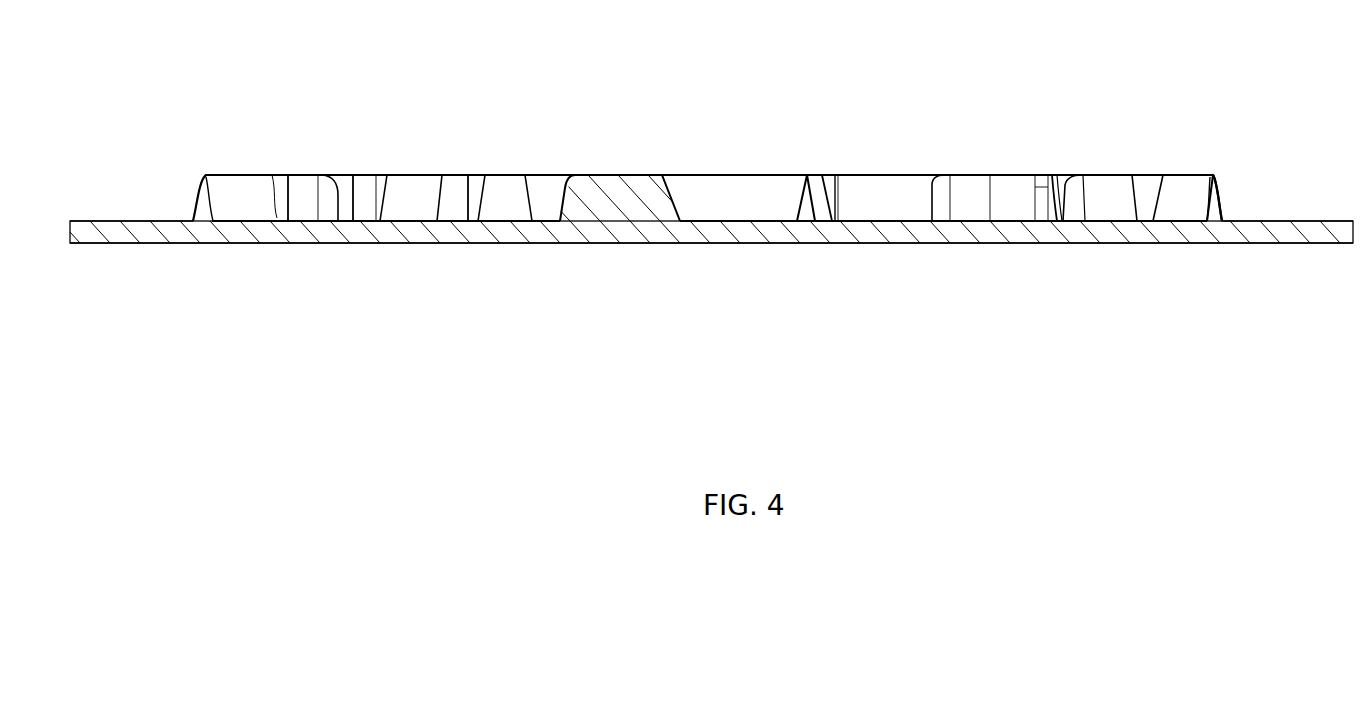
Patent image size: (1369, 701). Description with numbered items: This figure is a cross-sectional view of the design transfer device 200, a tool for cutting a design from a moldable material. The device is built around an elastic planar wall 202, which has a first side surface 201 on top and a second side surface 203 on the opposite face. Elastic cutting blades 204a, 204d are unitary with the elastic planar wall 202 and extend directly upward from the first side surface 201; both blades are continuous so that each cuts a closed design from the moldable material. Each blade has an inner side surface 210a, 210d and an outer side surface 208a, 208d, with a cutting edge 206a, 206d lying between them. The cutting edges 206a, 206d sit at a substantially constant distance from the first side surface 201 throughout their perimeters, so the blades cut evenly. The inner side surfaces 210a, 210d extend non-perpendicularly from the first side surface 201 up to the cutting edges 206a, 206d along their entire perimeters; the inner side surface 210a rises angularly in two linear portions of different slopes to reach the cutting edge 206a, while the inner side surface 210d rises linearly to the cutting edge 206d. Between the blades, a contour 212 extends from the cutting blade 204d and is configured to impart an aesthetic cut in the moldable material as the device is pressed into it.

The design transfer device 200 is at (928, 100).
The first side surface 201 is at (405, 218).
The elastic planar wall 202 is at (120, 230).
The second side surface 203 is at (763, 243).
The elastic cutting blade 204a is at (262, 172).
The elastic cutting blade 204d is at (690, 208).
The cutting edge 206a is at (1213, 175).
The cutting edge 206d is at (807, 175).
The outer side surface 208a is at (1220, 192).
The outer side surface 208d is at (814, 197).
The inner side surface 210a is at (232, 205).
The inner side surface 210d is at (803, 195).
The contour 212 is at (596, 192).